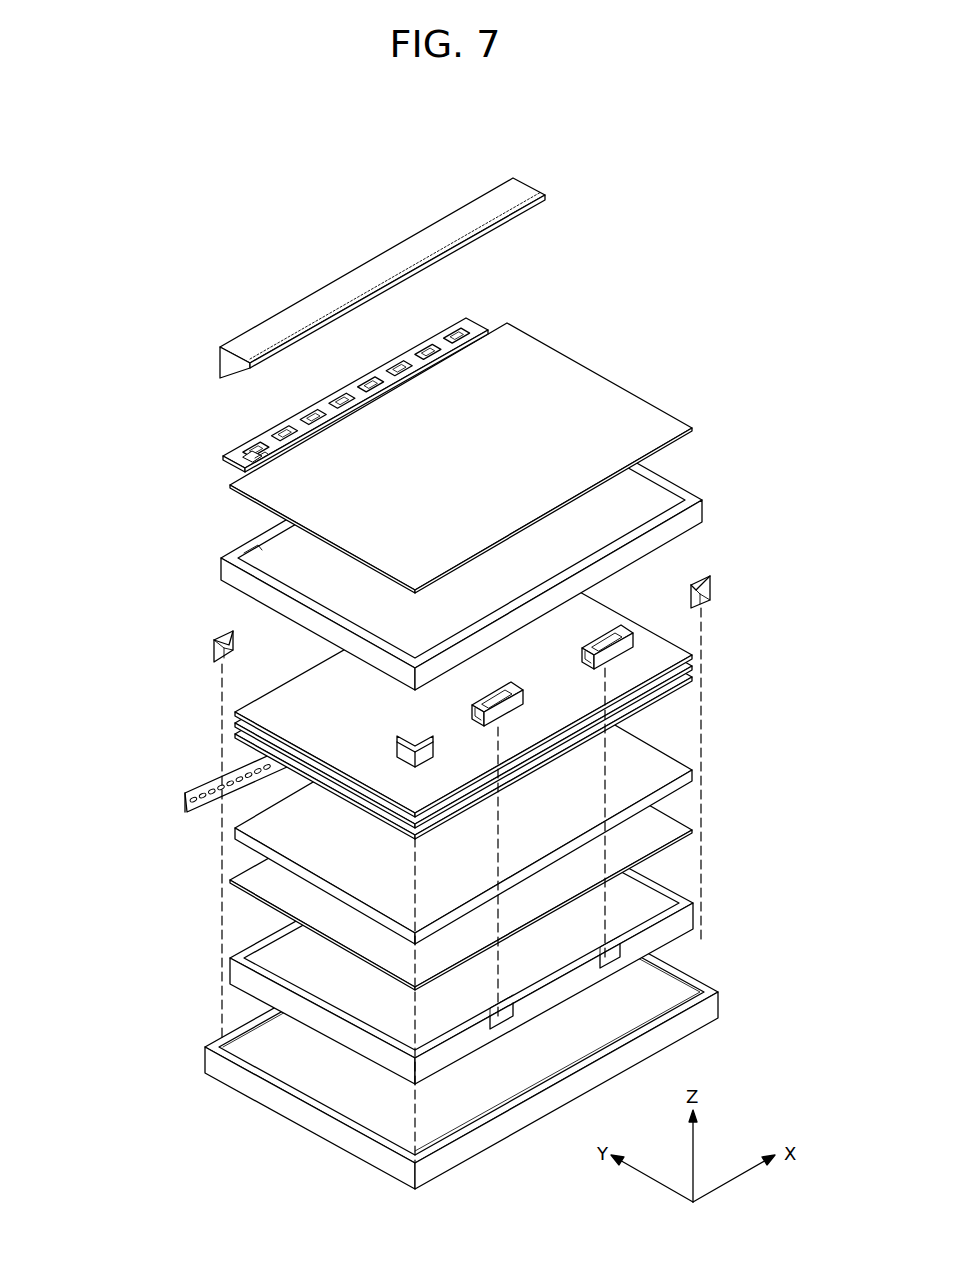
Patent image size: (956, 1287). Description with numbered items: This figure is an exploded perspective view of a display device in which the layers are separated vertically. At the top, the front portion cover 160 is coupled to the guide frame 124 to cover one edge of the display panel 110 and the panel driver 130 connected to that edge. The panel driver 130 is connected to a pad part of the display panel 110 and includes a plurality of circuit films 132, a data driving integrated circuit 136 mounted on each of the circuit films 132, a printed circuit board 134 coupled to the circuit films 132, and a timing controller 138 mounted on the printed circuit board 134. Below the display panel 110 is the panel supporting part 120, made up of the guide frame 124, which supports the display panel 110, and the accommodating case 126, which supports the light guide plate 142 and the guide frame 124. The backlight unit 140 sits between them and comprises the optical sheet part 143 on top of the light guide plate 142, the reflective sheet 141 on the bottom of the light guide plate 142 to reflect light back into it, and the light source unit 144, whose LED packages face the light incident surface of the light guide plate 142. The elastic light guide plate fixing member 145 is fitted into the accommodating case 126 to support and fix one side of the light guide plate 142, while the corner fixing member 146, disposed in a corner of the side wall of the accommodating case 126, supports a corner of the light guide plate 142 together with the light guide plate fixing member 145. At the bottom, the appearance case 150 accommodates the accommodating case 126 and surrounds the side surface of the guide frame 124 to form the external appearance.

The display panel 110 is at (597, 385).
The panel supporting part 120 is at (785, 500).
The guide frame 124 is at (700, 514).
The accommodating case 126 is at (683, 917).
The panel driver 130 is at (300, 411).
The circuit films 132 is at (230, 476).
The printed circuit board 134 is at (272, 435).
The data driving integrated circuit 136 is at (242, 463).
The timing controller 138 is at (243, 450).
The backlight unit 140 is at (104, 628).
The reflective sheet 141 is at (236, 892).
The light guide plate 142 is at (237, 842).
The optical sheet part 143 is at (234, 710).
The light source unit 144 is at (183, 805).
The light guide plate fixing member 145 is at (470, 716).
The corner fixing member 146 is at (211, 644).
The appearance case 150 is at (703, 1005).
The front portion cover 160 is at (392, 262).